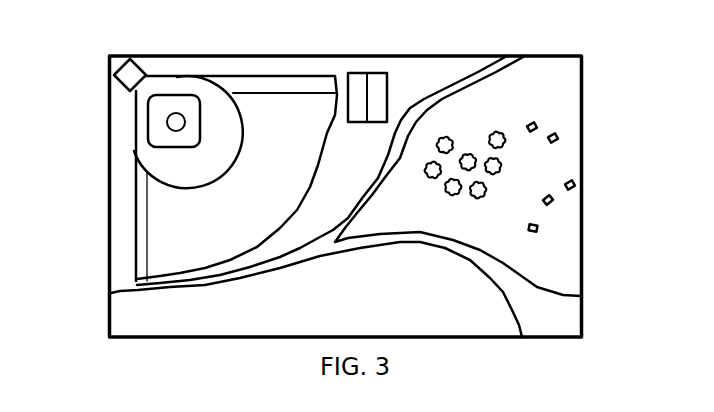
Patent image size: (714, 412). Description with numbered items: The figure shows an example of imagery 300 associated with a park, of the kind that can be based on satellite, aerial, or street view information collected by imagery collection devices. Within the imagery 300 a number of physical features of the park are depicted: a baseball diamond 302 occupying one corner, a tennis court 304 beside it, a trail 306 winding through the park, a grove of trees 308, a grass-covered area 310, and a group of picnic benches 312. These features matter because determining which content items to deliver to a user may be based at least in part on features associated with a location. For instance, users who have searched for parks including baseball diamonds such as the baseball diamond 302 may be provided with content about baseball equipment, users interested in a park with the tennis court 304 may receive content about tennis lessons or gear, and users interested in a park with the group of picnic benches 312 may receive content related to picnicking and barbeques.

The imagery 300 is at (96, 74).
The baseball diamond 302 is at (258, 118).
The tennis court 304 is at (362, 93).
The trail 306 is at (300, 256).
The grove of trees 308 is at (431, 189).
The grass-covered area 310 is at (548, 95).
The group of picnic benches 312 is at (525, 203).